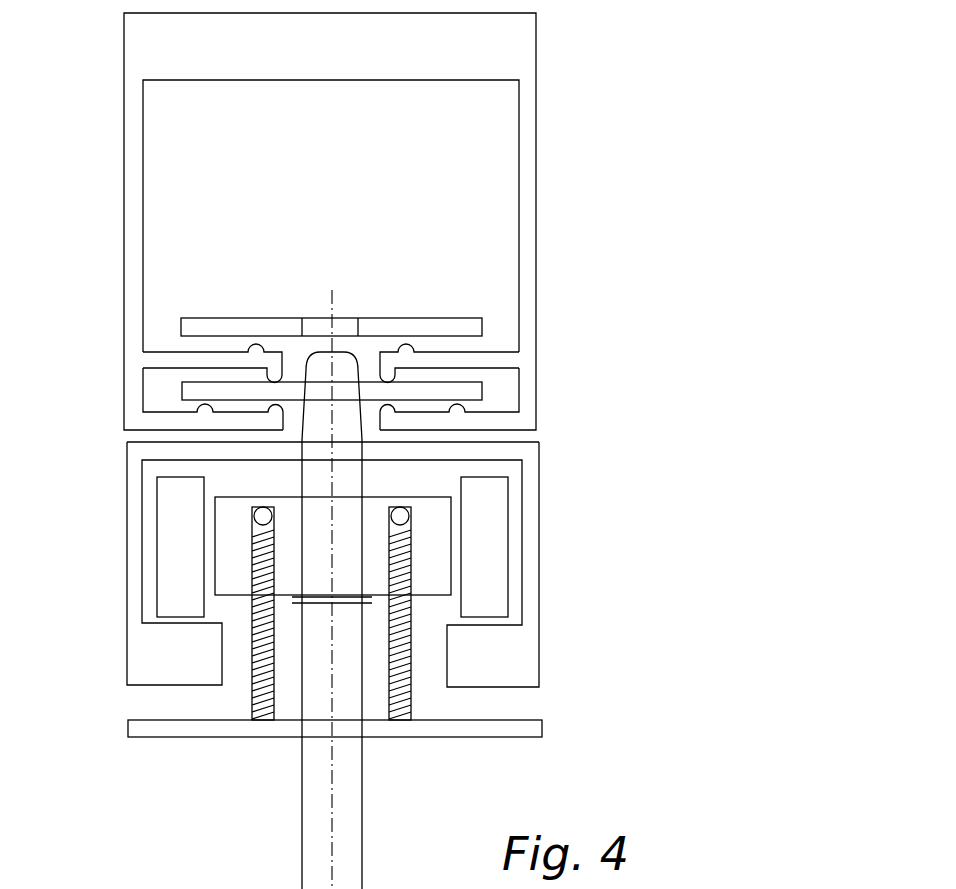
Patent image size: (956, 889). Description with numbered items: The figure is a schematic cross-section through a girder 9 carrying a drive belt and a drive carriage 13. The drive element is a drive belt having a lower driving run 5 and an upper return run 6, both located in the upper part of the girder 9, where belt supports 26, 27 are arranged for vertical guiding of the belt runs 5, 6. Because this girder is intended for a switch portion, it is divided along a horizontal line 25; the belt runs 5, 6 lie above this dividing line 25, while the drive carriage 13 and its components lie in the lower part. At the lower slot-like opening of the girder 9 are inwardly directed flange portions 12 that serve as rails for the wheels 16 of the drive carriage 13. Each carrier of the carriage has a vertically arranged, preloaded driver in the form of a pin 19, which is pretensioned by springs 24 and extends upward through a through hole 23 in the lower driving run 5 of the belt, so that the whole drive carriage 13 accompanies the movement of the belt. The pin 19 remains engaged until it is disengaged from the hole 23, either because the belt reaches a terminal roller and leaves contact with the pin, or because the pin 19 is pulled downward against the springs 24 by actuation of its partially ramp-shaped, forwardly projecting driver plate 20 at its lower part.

The girder 9 is at (124, 156).
The return run 6 is at (290, 330).
The through hole 23 is at (343, 322).
The driving run 5 is at (243, 390).
The belt support 26 is at (467, 362).
The belt support 27 is at (488, 422).
The horizontal dividing line 25 is at (537, 435).
The wheel 16 is at (172, 508).
The drive carriage 13 is at (435, 527).
The driver pin 19 is at (320, 580).
The flange portion 12 is at (518, 624).
The spring 24 is at (252, 697).
The driver plate 20 is at (455, 727).